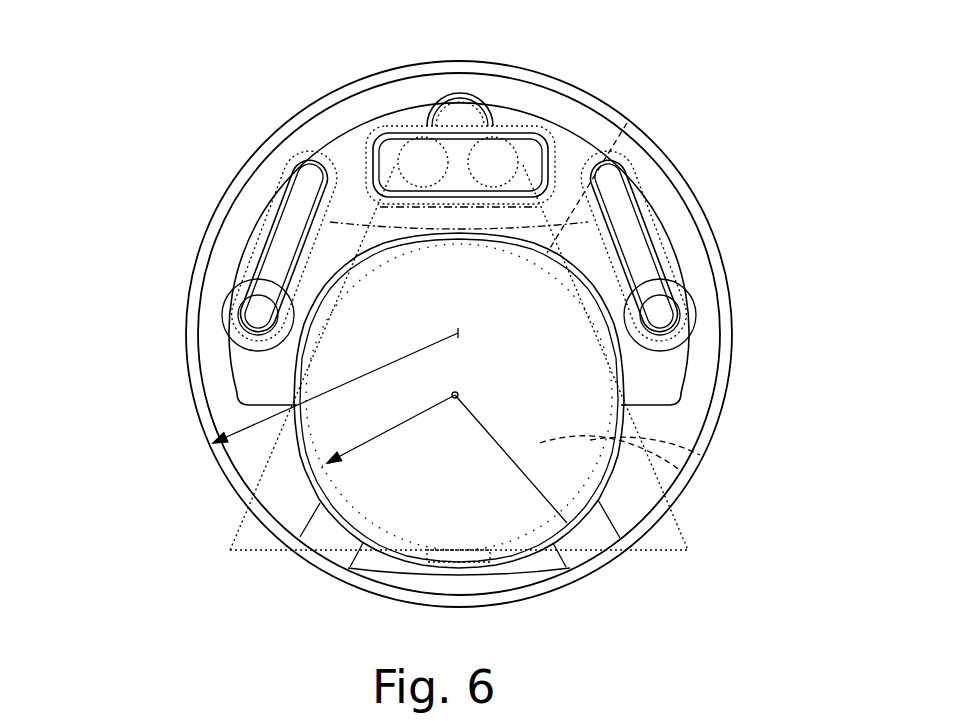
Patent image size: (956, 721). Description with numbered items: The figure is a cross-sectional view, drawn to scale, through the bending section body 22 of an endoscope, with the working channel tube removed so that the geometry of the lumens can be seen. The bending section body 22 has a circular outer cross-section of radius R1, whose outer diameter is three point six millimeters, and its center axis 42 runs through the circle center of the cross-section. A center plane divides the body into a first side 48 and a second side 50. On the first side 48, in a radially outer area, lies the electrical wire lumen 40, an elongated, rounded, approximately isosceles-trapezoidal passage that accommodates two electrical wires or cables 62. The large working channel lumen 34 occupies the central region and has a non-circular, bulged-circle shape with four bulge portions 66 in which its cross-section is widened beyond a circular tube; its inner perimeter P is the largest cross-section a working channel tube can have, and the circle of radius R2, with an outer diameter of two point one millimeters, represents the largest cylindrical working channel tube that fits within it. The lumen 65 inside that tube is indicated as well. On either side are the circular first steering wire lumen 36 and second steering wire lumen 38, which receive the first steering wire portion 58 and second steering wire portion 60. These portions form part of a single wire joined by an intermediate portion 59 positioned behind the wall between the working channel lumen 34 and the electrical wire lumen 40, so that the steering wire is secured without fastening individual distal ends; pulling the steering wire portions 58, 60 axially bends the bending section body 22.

The bending section body 22 is at (700, 112).
The working channel lumen 34 is at (667, 507).
The first steering wire lumen 36 is at (225, 308).
The second steering wire lumen 38 is at (693, 308).
The electrical wire lumen 40 is at (530, 135).
The center axis 42 is at (600, 560).
The first side 48 is at (298, 130).
The second side 50 is at (370, 567).
The first steering wire portion 58 is at (287, 240).
The intermediate portion 59 is at (627, 123).
The second steering wire portion 60 is at (640, 233).
The electrical wires or cables 62 is at (423, 150).
The lumen inside the working channel tube 65 is at (680, 470).
The bulge portions 66 is at (287, 243).
The radius of the bending section body cross-section R1 is at (458, 333).
The radius of the largest cylindrical working channel tube R2 is at (460, 395).
The inner perimeter of the working channel lumen P is at (327, 490).